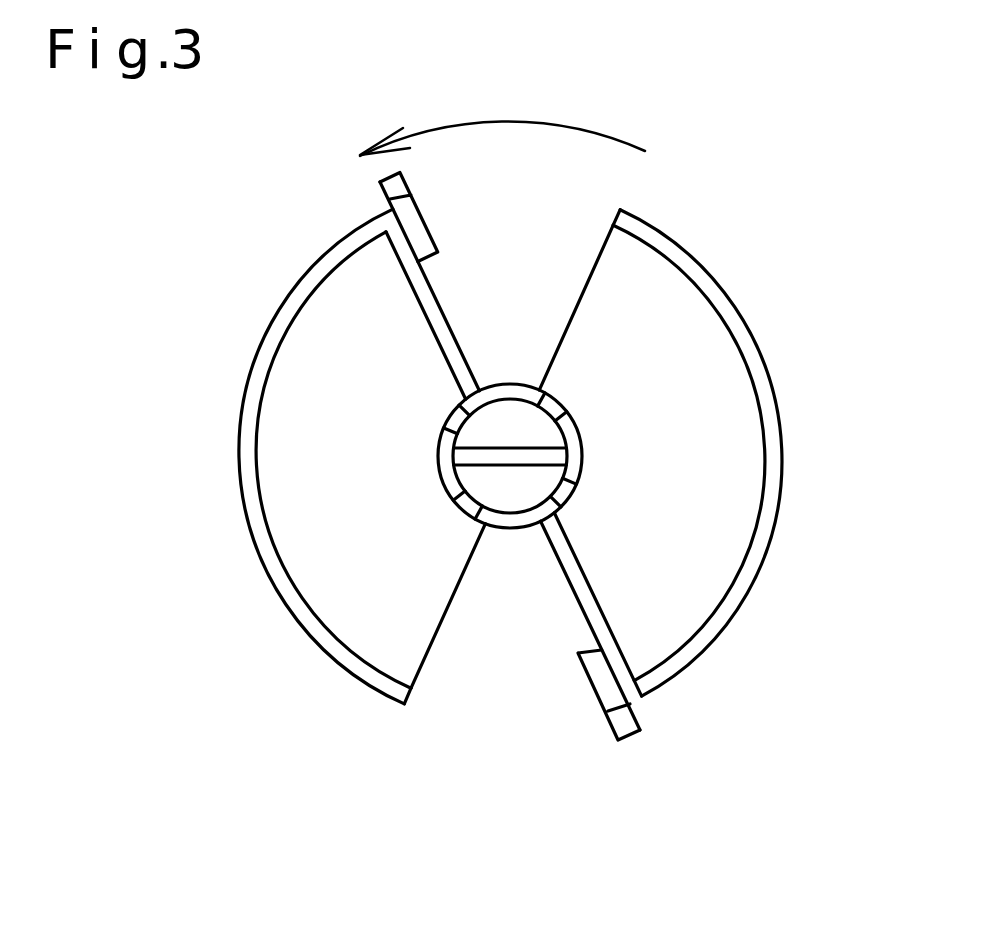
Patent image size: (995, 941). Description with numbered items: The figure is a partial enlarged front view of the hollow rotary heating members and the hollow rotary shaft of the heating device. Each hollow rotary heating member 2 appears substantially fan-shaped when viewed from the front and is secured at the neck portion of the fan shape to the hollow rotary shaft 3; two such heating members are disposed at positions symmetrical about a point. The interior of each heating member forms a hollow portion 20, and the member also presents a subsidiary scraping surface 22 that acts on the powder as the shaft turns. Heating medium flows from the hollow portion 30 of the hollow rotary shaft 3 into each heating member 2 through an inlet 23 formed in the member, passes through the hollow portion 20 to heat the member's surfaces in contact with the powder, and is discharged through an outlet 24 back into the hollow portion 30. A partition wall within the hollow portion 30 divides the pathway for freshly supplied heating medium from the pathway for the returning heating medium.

The hollow rotary heating member 2 is at (828, 474).
The hollow portion of a hollow rotary heating member 20 is at (658, 577).
The subsidiary scraping surface of a hollow rotary heating member 22 is at (586, 683).
The inlet for a heating medium to a hollow rotary heating member 23 is at (460, 415).
The outlet for a heating medium from a hollow rotary heating member 24 is at (478, 512).
The hollow rotary shaft 3 is at (507, 527).
The hollow portion of the hollow rotary shaft 30 is at (510, 430).